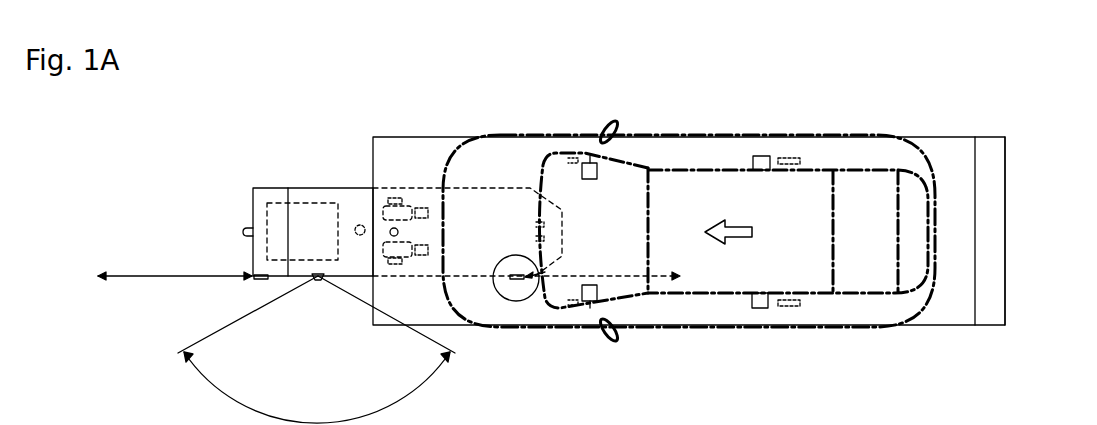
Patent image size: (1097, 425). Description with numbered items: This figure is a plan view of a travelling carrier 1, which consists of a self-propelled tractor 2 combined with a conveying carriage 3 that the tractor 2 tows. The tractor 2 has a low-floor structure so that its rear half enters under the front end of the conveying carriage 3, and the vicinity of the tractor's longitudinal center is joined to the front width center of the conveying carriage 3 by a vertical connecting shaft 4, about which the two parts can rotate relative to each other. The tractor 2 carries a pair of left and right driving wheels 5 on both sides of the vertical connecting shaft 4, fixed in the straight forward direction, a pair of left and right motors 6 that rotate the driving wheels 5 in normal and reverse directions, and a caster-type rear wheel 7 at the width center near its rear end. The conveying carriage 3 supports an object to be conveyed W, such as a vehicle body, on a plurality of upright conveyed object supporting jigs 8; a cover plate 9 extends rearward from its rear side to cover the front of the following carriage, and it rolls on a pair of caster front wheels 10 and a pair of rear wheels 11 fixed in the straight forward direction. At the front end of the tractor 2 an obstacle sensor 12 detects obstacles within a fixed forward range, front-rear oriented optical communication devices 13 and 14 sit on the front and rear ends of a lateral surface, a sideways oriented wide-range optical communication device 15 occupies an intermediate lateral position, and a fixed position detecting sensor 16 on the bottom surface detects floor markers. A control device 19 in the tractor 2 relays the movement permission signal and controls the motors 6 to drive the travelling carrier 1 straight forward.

The travelling carrier 1 is at (710, 135).
The tractor 2 is at (303, 188).
The conveying carriage 3 is at (943, 150).
The vertical connecting shaft 4 is at (390, 232).
The driving wheels 5 is at (395, 198).
The motors 6 is at (430, 213).
The rear wheel 7 is at (562, 214).
The conveyed object supporting jigs 8 is at (598, 172).
The cover plate 9 is at (992, 210).
The front wheels 10 is at (604, 128).
The rear wheels 11 is at (792, 157).
The obstacle sensor 12 is at (243, 232).
The front-rear oriented optical communication device 13 is at (258, 282).
The front-rear oriented optical communication device 14 is at (518, 283).
The sideways oriented wide-range optical communication device 15 is at (316, 285).
The fixed position detecting sensor 16 is at (352, 224).
The control device 19 is at (275, 210).
The object to be conveyed W is at (432, 137).